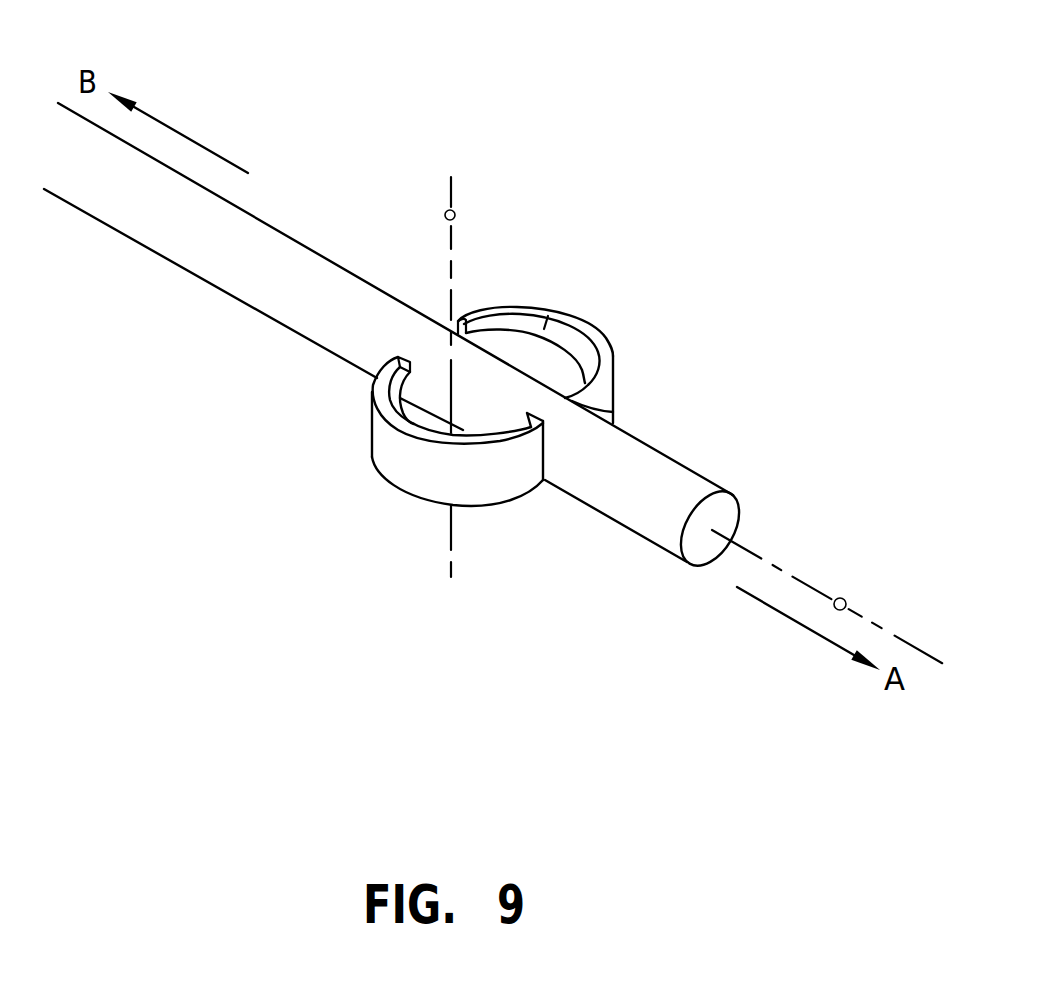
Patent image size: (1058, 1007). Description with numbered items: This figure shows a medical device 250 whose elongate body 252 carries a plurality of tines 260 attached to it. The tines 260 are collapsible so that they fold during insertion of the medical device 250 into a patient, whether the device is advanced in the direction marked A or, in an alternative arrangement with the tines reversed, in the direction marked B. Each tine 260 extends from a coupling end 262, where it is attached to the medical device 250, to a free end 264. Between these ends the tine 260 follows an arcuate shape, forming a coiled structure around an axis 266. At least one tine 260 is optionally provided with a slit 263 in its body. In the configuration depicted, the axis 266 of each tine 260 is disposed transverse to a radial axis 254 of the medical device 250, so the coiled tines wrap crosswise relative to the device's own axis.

The medical device 250 is at (748, 250).
The rod 252 is at (690, 468).
The radial axis 254 is at (845, 600).
The tine 260 is at (597, 324).
The coupling end 262 is at (614, 412).
The slit 263 is at (550, 316).
The free end 264 is at (464, 316).
The axis 266 is at (455, 213).